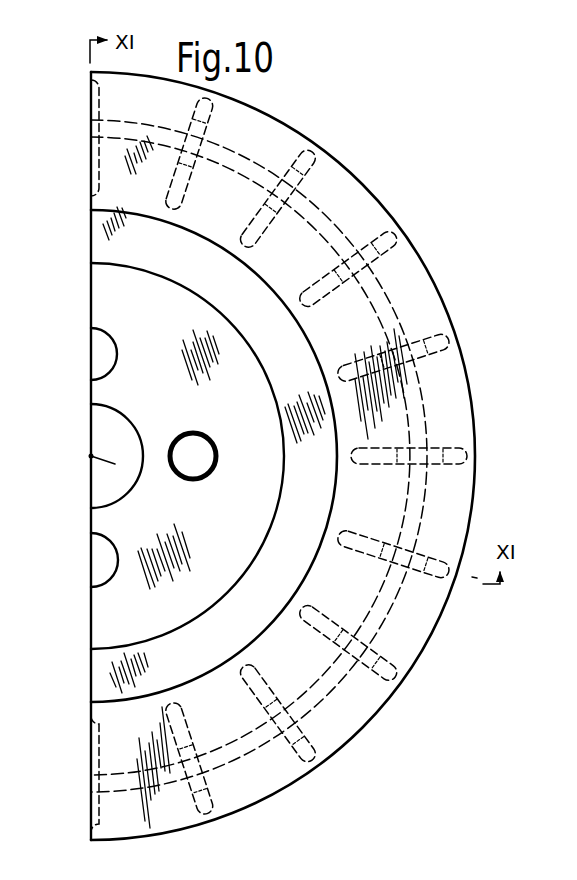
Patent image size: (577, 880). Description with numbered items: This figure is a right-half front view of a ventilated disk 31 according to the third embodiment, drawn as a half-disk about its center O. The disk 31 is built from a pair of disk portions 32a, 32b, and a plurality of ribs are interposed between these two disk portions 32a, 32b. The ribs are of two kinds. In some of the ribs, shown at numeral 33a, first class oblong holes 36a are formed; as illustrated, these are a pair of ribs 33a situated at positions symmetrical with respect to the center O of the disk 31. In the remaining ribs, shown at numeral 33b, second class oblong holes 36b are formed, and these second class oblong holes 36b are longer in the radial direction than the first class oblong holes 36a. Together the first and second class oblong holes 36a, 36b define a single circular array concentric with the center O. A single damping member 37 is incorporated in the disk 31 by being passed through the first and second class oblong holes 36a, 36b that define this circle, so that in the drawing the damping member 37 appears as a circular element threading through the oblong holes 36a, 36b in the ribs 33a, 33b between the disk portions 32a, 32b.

The disk 31 is at (435, 200).
The disk portion 32a is at (268, 130).
The disk portion 32b is at (266, 482).
The rib 33a is at (435, 562).
The rib 33b is at (318, 158).
The first class oblong hole 36a is at (386, 566).
The second class oblong hole 36b is at (268, 200).
The damping member 37 is at (385, 292).
The center O is at (91, 456).